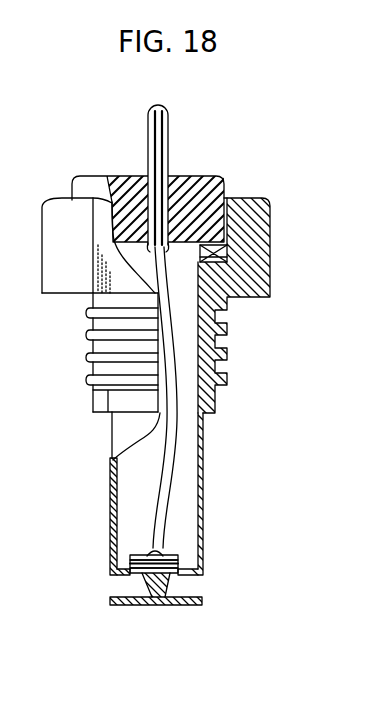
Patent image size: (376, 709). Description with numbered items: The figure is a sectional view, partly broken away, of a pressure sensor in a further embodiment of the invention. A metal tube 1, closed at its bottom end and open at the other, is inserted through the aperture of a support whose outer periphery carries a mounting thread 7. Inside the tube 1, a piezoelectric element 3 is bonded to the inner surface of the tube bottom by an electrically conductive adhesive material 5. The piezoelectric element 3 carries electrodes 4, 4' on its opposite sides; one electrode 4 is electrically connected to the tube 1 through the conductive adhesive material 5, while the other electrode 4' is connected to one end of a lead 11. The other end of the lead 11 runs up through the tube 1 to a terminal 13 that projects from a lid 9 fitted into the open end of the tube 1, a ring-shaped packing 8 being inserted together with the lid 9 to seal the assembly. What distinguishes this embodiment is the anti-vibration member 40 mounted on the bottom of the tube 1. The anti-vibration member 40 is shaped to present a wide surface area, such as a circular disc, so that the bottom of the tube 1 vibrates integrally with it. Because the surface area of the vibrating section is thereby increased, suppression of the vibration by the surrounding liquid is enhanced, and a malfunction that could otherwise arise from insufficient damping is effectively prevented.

The metal tube 1 is at (198, 455).
The piezoelectric element 3 is at (178, 565).
The electrode 4 is at (180, 591).
The electrode 4' is at (186, 540).
The electrically conductive adhesive material 5 is at (138, 575).
The mounting thread 7 is at (227, 330).
The ring-shaped packing 8 is at (227, 249).
The lid 9 is at (211, 190).
The lead 11 is at (157, 496).
The terminal 13 is at (166, 143).
The anti-vibration member 40 is at (160, 607).